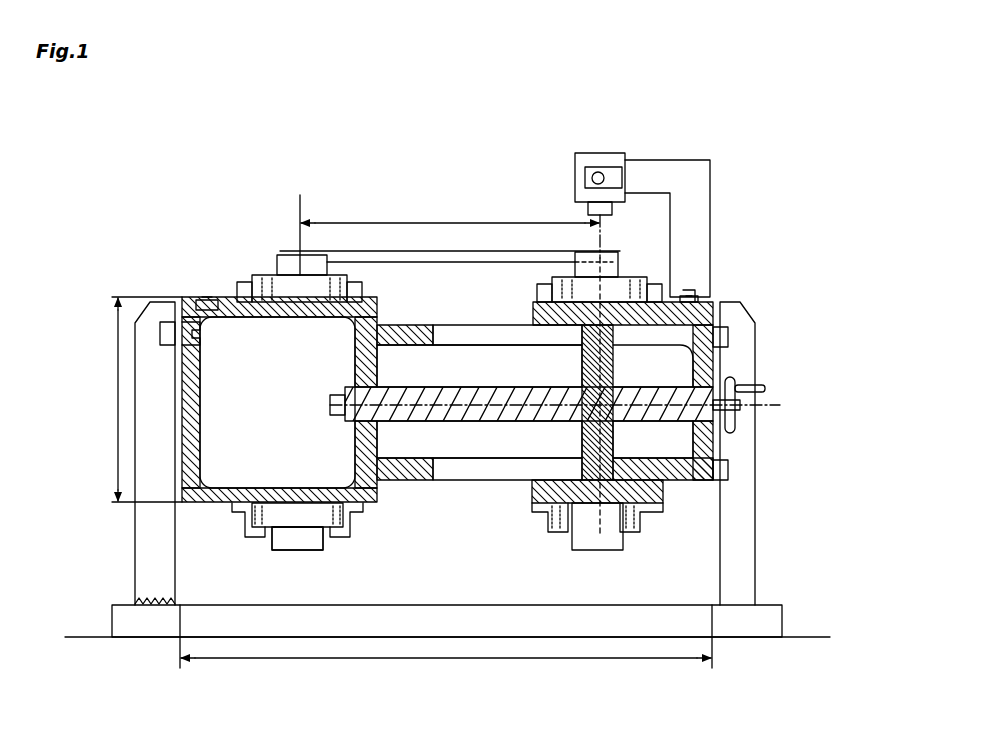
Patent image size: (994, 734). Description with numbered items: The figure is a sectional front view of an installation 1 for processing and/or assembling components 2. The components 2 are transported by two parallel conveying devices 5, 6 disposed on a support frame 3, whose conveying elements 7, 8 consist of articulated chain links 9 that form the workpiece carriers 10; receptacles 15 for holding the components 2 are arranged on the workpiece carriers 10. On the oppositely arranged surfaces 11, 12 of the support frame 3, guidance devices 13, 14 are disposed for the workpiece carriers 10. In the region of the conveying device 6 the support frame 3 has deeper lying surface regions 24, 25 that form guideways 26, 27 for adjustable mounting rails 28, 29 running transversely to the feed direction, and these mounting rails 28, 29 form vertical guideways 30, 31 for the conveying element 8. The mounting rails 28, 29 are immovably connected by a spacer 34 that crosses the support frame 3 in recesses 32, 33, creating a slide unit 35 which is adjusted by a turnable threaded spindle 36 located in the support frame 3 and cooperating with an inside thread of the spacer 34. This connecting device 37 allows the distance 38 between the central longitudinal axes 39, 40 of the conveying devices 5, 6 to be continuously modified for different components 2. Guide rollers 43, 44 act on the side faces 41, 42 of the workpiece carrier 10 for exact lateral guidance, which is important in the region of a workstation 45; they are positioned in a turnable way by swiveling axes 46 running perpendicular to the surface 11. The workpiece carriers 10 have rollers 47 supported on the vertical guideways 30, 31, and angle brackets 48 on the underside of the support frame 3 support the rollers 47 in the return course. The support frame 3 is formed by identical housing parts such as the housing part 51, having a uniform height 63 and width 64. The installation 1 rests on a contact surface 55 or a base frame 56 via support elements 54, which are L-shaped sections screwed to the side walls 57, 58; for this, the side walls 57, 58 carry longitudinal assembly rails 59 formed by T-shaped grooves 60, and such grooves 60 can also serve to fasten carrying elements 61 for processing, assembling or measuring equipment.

The installation 1 is at (153, 205).
The components 2 is at (378, 262).
The support frame 3 is at (230, 245).
The conveying device 5 is at (283, 233).
The conveying device 6 is at (565, 163).
The conveying element 7 is at (275, 300).
The conveying element 8 is at (592, 300).
The chain links 9 is at (300, 305).
The workpiece carrier 10 is at (320, 310).
The surface 11 is at (232, 292).
The surface 12 is at (205, 505).
The guidance device 13 is at (228, 277).
The guidance device 14 is at (665, 275).
The receptacles 15 is at (318, 262).
The surface region 24 is at (392, 324).
The surface region 25 is at (397, 482).
The guideway 26 is at (457, 318).
The guideway 27 is at (512, 485).
The mounting rail 28 is at (578, 310).
The mounting rail 29 is at (555, 490).
The vertical guideway 30 is at (630, 295).
The vertical guideway 31 is at (607, 500).
The recess 32 is at (492, 340).
The recess 33 is at (466, 462).
The spacer 34 is at (613, 360).
The slide unit 35 is at (725, 305).
The threaded spindle 36 is at (468, 422).
The connecting device 37 is at (737, 437).
The distance 38 is at (432, 222).
The central longitudinal axis 39 is at (303, 212).
The central longitudinal axis 40 is at (598, 232).
The side face 41 is at (553, 277).
The side face 42 is at (700, 290).
The guide rollers 43 is at (240, 262).
The guide rollers 44 is at (543, 292).
The workstation 45 is at (605, 145).
The swiveling axes 46 is at (355, 278).
The rollers 47 is at (262, 275).
The angle brackets 48 is at (365, 525).
The housing part 51 is at (295, 490).
The support elements 54 is at (148, 490).
The contact surface 55 is at (98, 633).
The base frame 56 is at (760, 628).
The side wall 57 is at (182, 385).
The side wall 58 is at (718, 362).
The assembly rails 59 is at (215, 342).
The T-shaped grooves 60 is at (205, 297).
The carrying elements 61 is at (698, 218).
The height 63 is at (118, 399).
The width 64 is at (420, 660).